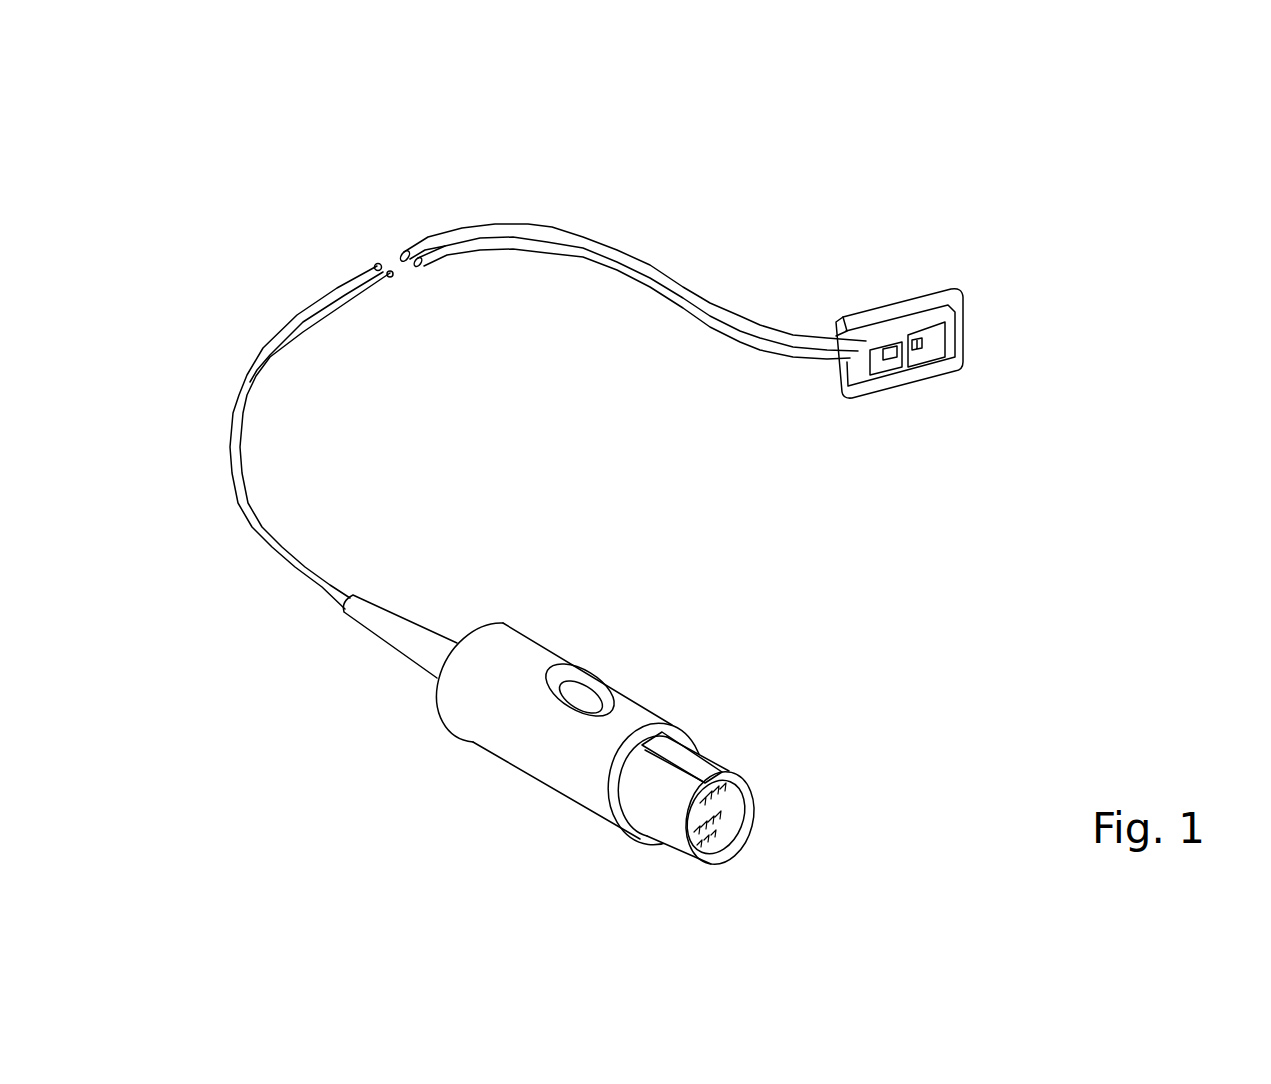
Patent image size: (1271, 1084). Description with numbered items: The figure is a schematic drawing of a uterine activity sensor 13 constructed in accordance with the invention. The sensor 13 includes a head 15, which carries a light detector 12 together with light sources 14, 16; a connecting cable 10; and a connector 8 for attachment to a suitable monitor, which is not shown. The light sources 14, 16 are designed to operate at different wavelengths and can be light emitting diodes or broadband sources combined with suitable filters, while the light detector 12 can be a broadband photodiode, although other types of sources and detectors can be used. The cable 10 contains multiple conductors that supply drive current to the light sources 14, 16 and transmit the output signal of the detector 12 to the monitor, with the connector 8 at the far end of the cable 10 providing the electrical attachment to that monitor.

The connector 8 is at (487, 735).
The connecting cable 10 is at (553, 227).
The light detector 12 is at (890, 363).
The uterine activity sensor 13 is at (180, 608).
The light source 14 is at (921, 345).
The head 15 is at (945, 280).
The light source 16 is at (922, 341).